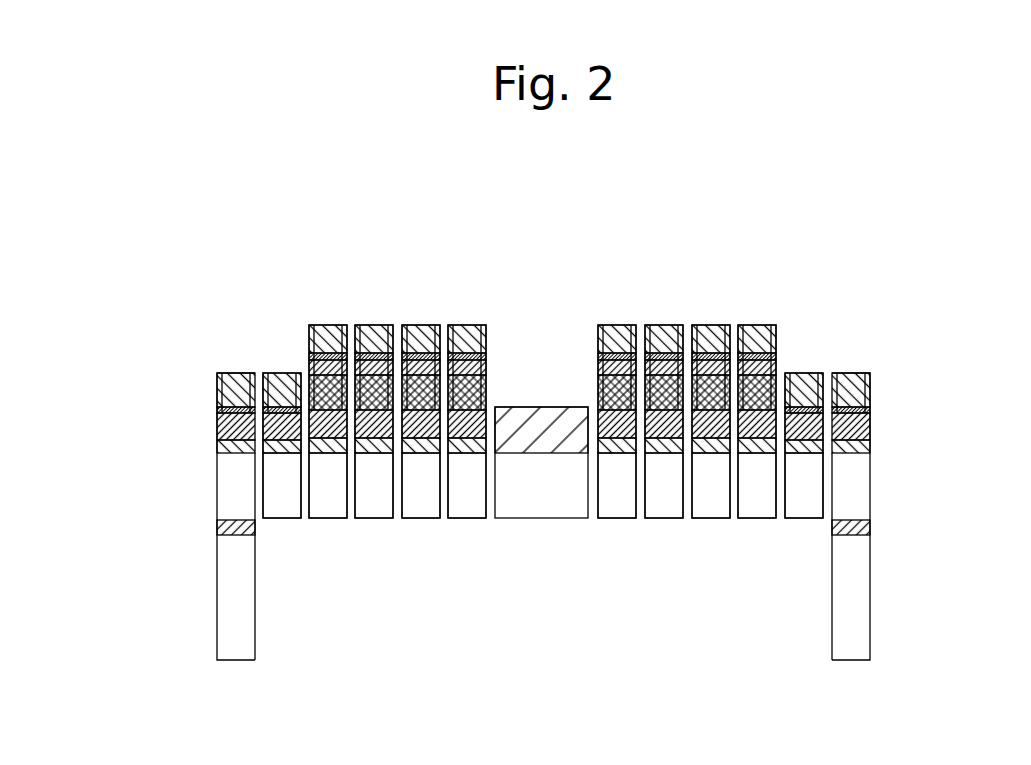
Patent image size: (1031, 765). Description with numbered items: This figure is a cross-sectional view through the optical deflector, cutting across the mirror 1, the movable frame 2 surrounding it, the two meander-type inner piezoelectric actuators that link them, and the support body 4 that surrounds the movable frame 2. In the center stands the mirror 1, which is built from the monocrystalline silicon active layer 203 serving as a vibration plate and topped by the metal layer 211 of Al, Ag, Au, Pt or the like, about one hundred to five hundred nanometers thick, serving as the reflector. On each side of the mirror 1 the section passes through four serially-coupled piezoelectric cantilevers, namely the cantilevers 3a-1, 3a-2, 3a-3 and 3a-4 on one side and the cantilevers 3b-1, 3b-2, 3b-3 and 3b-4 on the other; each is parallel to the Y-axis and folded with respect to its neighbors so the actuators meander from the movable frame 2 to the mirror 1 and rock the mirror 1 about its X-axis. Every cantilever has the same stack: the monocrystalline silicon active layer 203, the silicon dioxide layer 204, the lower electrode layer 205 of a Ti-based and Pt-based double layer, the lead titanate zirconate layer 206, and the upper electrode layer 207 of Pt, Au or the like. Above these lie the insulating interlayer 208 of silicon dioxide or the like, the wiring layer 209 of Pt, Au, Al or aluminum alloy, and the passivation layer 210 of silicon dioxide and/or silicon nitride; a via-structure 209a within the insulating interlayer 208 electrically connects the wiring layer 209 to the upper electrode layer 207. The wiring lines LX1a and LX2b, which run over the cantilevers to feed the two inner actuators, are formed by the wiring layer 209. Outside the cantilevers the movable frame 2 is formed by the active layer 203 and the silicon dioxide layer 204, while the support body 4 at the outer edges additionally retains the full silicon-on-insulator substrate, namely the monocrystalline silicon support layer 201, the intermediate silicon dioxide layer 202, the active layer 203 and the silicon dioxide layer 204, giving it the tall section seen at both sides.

The mirror 1 is at (541, 280).
The movable frame 2 is at (283, 280).
The piezoelectric cantilever 3a-1 is at (328, 183).
The piezoelectric cantilever 3a-2 is at (375, 231).
The piezoelectric cantilever 3a-3 is at (418, 183).
The piezoelectric cantilever 3a-4 is at (499, 188).
The piezoelectric cantilever 3b-1 is at (755, 185).
The piezoelectric cantilever 3b-2 is at (708, 231).
The piezoelectric cantilever 3b-3 is at (660, 185).
The piezoelectric cantilever 3b-4 is at (613, 231).
The support body 4 is at (258, 455).
The monocrystalline silicon support layer 201 is at (220, 590).
The intermediate silicon dioxide layer 202 is at (220, 523).
The monocrystalline silicon active layer 203 is at (217, 485).
The silicon dioxide layer 204 is at (217, 447).
The lower electrode layer 205 is at (217, 428).
The lead titanate zirconate (PZT) layer 206 is at (309, 392).
The upper electrode layer 207 is at (309, 366).
The insulating interlayer 208 is at (309, 352).
The wiring layer 209 is at (309, 338).
The via-structure 209a is at (490, 360).
The passivation layer 210 is at (309, 327).
The metal layer 211 is at (543, 425).
The wiring line LX1a is at (316, 325).
The wiring line LX2b is at (336, 325).